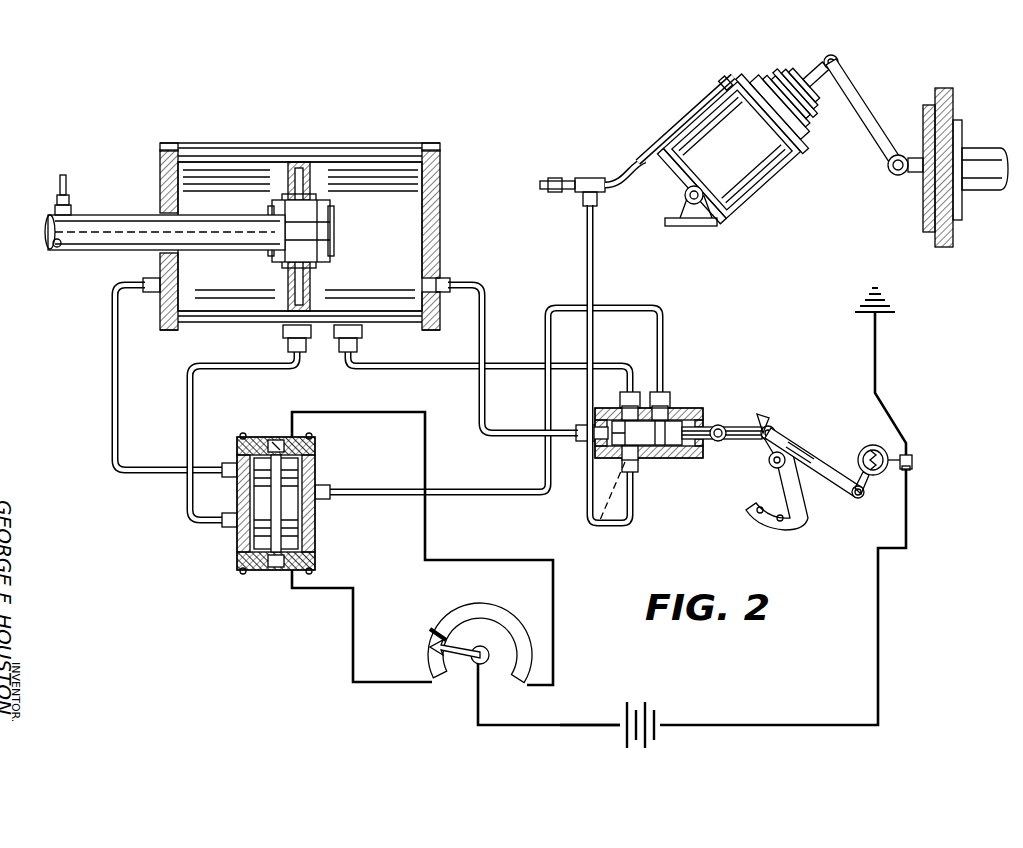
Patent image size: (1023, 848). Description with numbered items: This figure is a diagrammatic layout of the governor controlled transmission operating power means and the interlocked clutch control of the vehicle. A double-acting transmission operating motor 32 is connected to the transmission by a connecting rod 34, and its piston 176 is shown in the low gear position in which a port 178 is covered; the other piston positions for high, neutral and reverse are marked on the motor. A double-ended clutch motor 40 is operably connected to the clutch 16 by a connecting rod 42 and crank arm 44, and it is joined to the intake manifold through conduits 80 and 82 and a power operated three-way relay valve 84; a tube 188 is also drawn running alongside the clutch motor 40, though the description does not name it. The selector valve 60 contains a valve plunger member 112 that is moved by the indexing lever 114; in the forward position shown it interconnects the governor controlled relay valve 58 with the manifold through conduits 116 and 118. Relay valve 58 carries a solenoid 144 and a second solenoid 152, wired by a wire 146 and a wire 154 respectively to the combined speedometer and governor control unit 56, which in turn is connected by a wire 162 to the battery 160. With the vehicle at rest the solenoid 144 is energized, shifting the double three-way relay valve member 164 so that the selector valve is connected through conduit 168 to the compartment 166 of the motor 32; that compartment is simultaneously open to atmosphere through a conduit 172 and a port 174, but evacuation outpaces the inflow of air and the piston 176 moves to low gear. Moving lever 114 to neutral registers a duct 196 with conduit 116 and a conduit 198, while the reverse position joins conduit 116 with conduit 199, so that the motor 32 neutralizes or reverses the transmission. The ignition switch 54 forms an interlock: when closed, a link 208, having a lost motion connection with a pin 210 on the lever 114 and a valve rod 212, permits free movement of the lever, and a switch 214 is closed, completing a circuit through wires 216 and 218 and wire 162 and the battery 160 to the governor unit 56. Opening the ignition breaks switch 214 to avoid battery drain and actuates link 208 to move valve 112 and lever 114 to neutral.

The clutch 16 is at (923, 210).
The transmission operating pressure differential operated motor 32 is at (242, 142).
The connecting rod 34 is at (107, 248).
The clutch operating pressure differential operated motor 40 is at (731, 127).
The connecting rod 42 is at (822, 58).
The crank arm 44 is at (858, 102).
The ignition switch 54 is at (878, 473).
The combined speedometer and governor control unit 56 is at (467, 673).
The governor controlled relay valve 58 is at (261, 475).
The selector valve 60 is at (681, 423).
The conduit 80 is at (550, 180).
The conduit 82 is at (628, 182).
The power operated three-way relay valve 84 is at (672, 187).
The valve plunger member 112 is at (645, 430).
The indexing lever 114 is at (790, 485).
The conduit 116 is at (587, 282).
The conduit 118 is at (663, 347).
The solenoid 144 is at (288, 575).
The wire 146 is at (350, 642).
The second solenoid 152 is at (255, 437).
The wire 154 is at (392, 410).
The battery 160 is at (652, 707).
The wire 162 is at (557, 730).
The double three-way relay valve member 164 is at (277, 513).
The compartment 166 is at (233, 290).
The conduit 168 is at (187, 490).
The conduit 172 is at (112, 403).
The port 174 is at (277, 435).
The piston 176 is at (311, 273).
The port 178 is at (288, 330).
The vacuum tube 188 is at (690, 120).
The duct 196 is at (592, 522).
The conduit 198 is at (505, 363).
The conduit 199 is at (472, 292).
The link 208 is at (833, 470).
The pin 210 is at (780, 445).
The valve rod 212 is at (745, 436).
The switch 214 is at (907, 477).
The wire 216 is at (877, 358).
The wire 218 is at (875, 640).